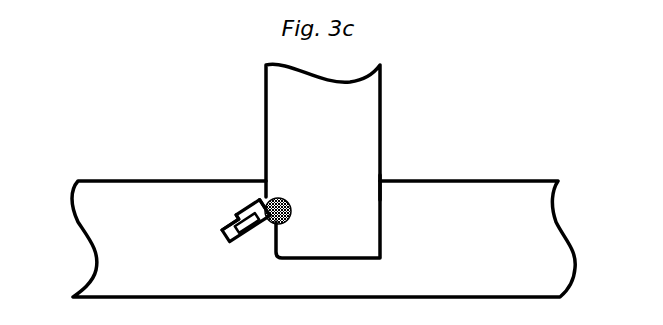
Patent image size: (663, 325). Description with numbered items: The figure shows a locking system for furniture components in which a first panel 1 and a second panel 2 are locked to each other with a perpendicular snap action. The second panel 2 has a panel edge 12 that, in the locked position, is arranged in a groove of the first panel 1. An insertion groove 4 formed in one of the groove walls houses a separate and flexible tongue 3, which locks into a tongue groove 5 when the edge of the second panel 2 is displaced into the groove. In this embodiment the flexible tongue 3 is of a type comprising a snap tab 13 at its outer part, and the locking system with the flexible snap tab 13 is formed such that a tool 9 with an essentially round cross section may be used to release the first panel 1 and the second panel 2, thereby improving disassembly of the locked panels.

The first panel 1 is at (121, 228).
The second panel 2 is at (383, 134).
The flexible tongue 3 is at (232, 220).
The insertion groove 4 is at (223, 236).
The tongue groove 5 is at (289, 198).
The tool 9 is at (270, 194).
The panel edge 12 is at (360, 187).
The snap tab 13 is at (272, 235).